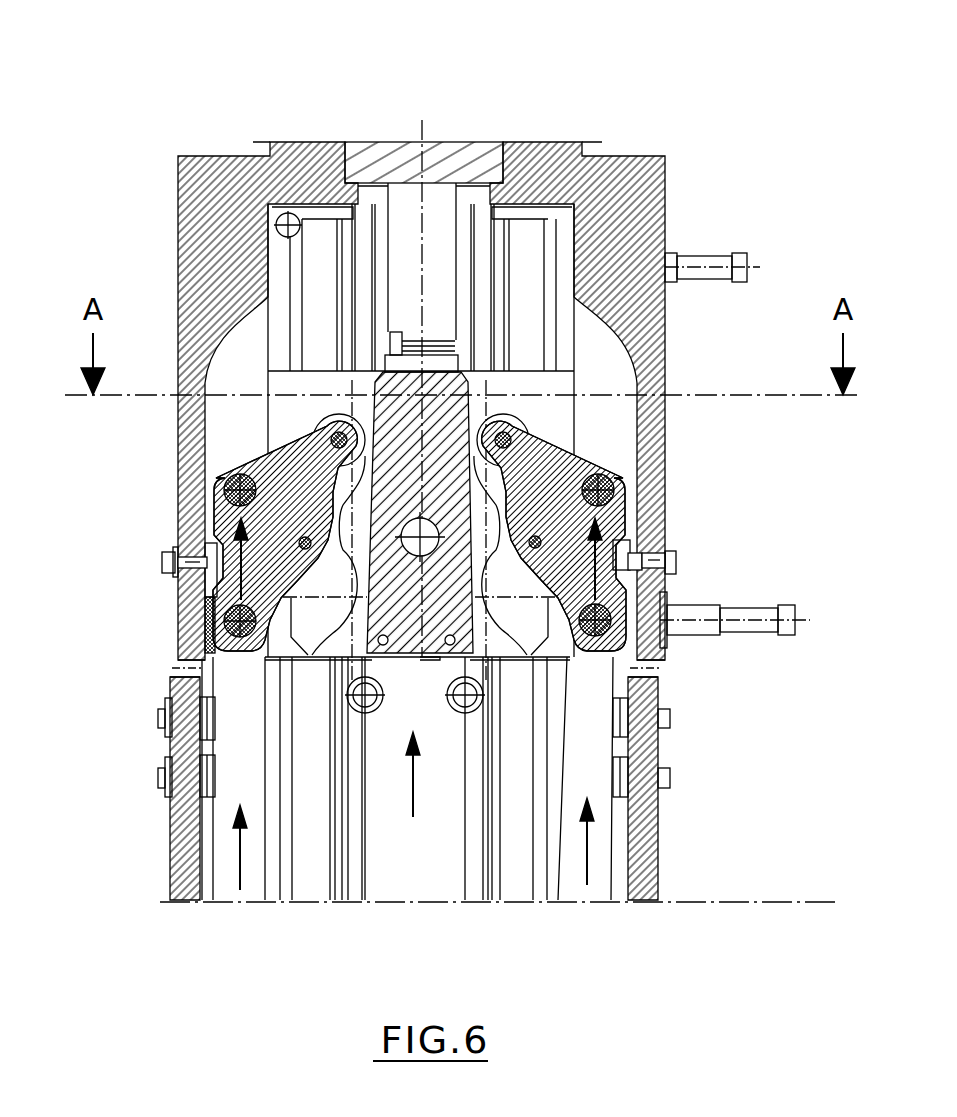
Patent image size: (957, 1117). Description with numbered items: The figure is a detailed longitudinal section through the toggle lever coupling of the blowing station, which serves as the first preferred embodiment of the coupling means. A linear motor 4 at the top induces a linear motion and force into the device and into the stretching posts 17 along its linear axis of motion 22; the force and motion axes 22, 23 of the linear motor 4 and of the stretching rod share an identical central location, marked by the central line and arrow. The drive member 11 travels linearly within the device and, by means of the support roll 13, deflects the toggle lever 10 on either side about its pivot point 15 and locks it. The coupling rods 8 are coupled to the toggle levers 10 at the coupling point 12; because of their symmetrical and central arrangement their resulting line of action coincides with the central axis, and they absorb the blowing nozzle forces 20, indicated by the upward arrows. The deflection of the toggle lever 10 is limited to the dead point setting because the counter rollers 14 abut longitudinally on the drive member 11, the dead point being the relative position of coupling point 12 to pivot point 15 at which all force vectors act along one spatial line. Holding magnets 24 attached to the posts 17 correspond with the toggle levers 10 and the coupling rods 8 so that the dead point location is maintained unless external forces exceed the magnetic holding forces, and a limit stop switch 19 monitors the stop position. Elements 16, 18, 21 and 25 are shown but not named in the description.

The linear motor 4 is at (383, 150).
The coupling rods 8 is at (223, 883).
The toggle lever 10 is at (336, 437).
The drive member 11 is at (293, 378).
The coupling point 12 is at (213, 633).
The support roll 13 is at (537, 537).
The counter rollers 14 is at (520, 428).
The pivot point 15 is at (213, 495).
The guide rods 16 is at (318, 280).
The posts of the device 17 is at (195, 160).
The fastening bolt 18 is at (205, 583).
The limit stop switch 19 is at (790, 610).
The blowing nozzle forces 20 is at (233, 513).
The actuating rod 21 is at (443, 185).
The linear axis of motion 22 is at (430, 245).
The force and motion axis 23 is at (405, 778).
The holding magnets 24 is at (618, 555).
The adjusting nut 25 is at (457, 362).